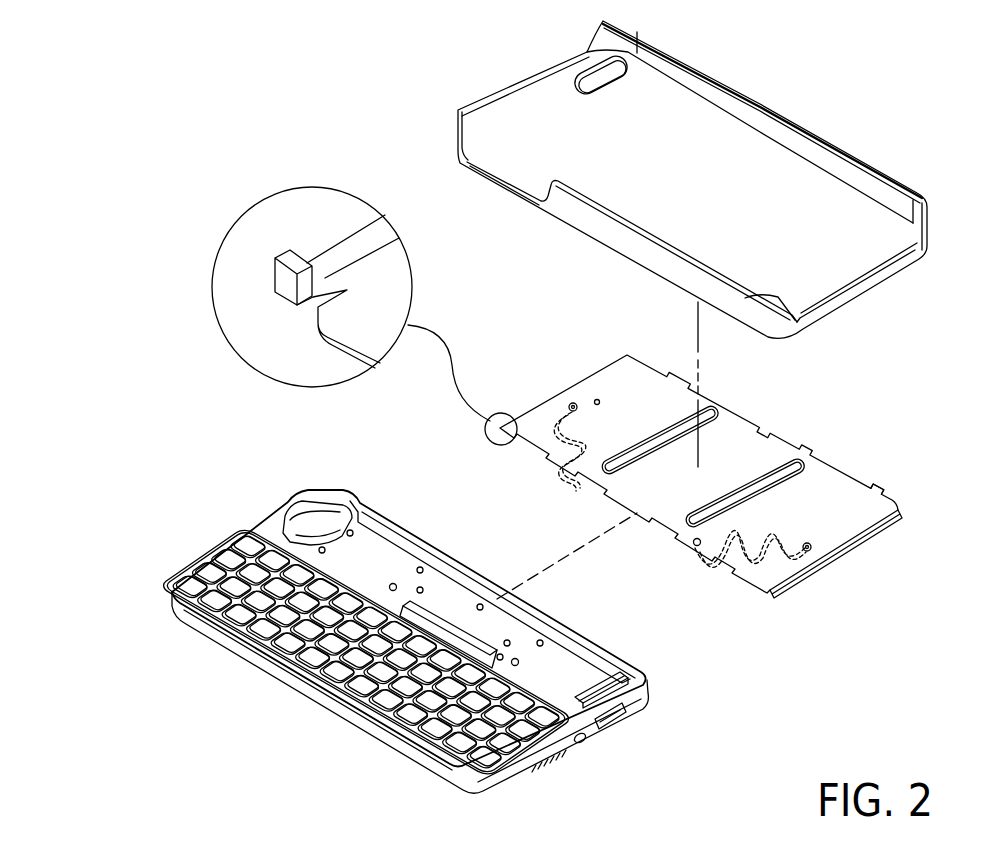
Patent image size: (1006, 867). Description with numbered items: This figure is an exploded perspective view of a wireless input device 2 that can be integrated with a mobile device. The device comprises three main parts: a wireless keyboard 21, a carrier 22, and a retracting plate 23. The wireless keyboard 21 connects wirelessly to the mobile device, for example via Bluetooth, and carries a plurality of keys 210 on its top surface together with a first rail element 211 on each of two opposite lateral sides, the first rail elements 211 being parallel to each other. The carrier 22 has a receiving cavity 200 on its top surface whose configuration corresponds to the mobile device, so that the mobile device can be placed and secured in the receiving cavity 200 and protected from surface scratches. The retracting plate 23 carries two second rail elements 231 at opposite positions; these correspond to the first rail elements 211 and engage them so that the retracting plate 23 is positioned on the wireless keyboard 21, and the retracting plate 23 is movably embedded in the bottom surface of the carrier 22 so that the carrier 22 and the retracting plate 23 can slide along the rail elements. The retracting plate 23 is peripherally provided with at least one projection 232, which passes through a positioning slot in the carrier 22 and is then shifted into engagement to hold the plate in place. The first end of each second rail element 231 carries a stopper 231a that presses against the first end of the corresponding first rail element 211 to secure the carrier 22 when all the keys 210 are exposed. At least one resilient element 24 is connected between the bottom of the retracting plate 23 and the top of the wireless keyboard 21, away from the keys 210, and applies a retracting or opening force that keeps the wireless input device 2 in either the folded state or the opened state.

The wireless input device 2 is at (80, 144).
The receiving cavity 200 is at (723, 128).
The wireless keyboard 21 is at (426, 636).
The keys 210 is at (210, 563).
The first rail element 211 is at (623, 705).
The carrier 22 is at (853, 175).
The retracting plate 23 is at (692, 473).
The second rail element 231 is at (850, 543).
The stopper 231a is at (290, 257).
The projection 232 is at (880, 483).
The resilient element 24 is at (717, 560).